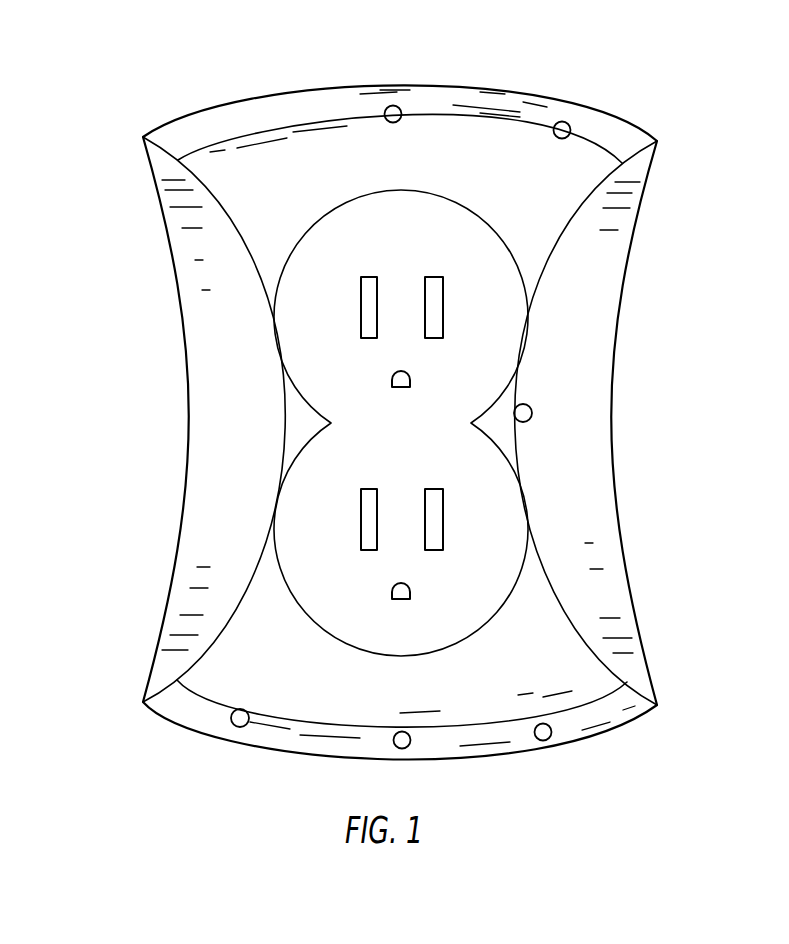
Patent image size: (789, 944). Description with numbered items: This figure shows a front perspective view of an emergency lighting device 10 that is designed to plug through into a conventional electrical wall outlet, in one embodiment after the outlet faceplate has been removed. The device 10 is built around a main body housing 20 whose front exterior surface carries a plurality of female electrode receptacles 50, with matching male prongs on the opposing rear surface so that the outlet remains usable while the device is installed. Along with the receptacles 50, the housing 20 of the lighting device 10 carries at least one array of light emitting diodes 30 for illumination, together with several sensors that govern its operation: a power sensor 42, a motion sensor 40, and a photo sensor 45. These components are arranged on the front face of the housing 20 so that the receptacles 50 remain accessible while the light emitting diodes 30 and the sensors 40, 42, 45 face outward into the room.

The lighting device 10 is at (397, 84).
The main body housing 20 is at (532, 412).
The array of light emitting diodes (LEDs) 30 is at (401, 113).
The motion sensor 40 is at (551, 735).
The power sensor 42 is at (237, 727).
The photo sensor 45 is at (567, 137).
The female electrode receptacles 50 is at (440, 511).